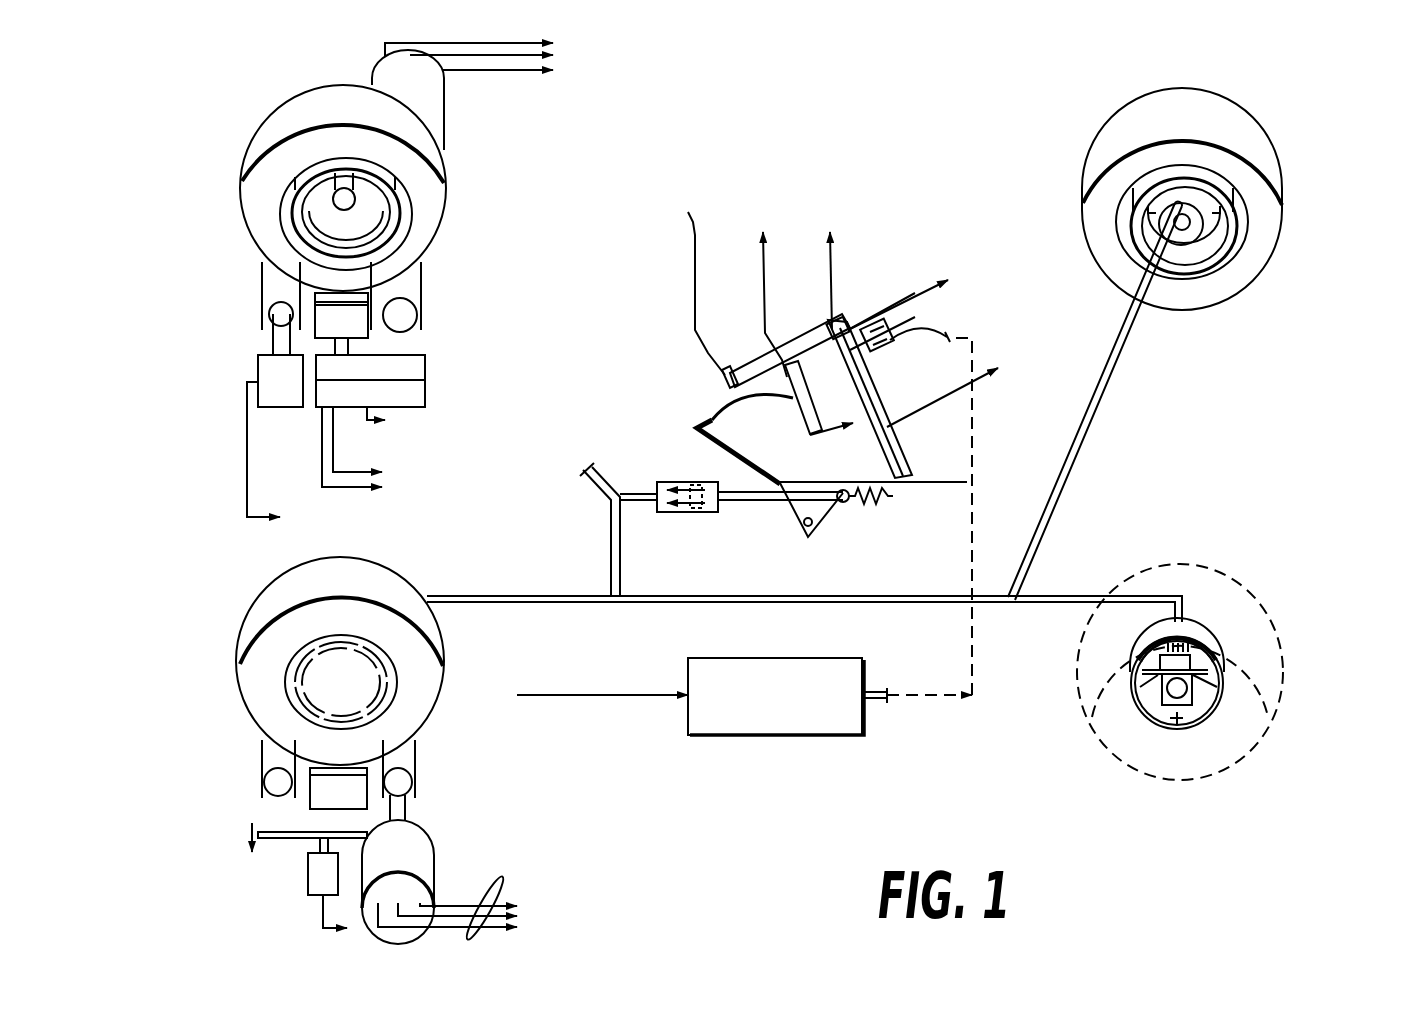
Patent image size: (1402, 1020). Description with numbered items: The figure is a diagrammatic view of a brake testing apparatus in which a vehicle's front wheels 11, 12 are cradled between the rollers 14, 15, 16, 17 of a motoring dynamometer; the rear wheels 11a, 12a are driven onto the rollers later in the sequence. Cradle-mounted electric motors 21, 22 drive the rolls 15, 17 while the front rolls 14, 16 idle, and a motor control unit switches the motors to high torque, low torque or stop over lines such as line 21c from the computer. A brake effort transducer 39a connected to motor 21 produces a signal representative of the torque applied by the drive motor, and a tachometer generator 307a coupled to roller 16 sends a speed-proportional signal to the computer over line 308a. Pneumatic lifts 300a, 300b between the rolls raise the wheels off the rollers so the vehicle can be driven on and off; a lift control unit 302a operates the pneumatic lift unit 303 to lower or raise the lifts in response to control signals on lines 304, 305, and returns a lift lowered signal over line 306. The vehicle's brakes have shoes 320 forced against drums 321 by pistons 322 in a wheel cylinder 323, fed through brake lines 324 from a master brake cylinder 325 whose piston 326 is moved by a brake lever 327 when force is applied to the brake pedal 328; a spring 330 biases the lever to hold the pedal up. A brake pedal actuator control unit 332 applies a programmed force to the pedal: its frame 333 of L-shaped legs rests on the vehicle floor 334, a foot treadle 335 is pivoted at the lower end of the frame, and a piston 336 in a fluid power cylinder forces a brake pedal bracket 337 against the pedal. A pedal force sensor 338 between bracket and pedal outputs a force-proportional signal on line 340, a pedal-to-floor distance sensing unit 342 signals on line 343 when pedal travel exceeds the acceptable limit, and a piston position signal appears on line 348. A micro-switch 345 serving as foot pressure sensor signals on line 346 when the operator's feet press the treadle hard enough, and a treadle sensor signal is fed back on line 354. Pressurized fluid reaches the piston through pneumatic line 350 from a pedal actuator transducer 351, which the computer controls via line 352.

The front wheel 11 is at (258, 588).
The rear wheel 11a is at (1282, 687).
The front wheel 12 is at (246, 135).
The rear wheel 12a is at (1283, 180).
The roller 14 is at (237, 788).
The drive roll 15 is at (416, 792).
The roller 16 is at (262, 285).
The drive roll 17 is at (427, 285).
The electric motor 21 is at (436, 854).
The motor control line 21c is at (531, 899).
The electric motor 22 is at (445, 99).
The brake effort transducer 39a is at (308, 880).
The pneumatic lift 300a is at (328, 318).
The pneumatic lift 300b is at (329, 787).
The lift control unit 302a is at (425, 393).
The pneumatic lift unit 303 is at (425, 358).
The control line 304 is at (320, 482).
The control line 305 is at (360, 486).
The lift lowered signal line 306 is at (362, 420).
The tachometer generator 307a is at (258, 375).
The tachometer signal line 308a is at (247, 460).
The brake shoe 320 is at (1217, 703).
The brake drum 321 is at (1217, 652).
The wheel cylinder piston 322 is at (1175, 640).
The wheel cylinder 323 is at (1142, 683).
The brake line 324 is at (1062, 596).
The master brake cylinder 325 is at (655, 482).
The master cylinder piston 326 is at (697, 513).
The brake lever 327 is at (778, 513).
The brake pedal 328 is at (727, 398).
The spring 330 is at (870, 505).
The brake pedal actuator control unit 332 is at (892, 207).
The frame 333 is at (713, 356).
The floor 334 is at (700, 281).
The foot treadle 335 is at (898, 441).
The piston 336 is at (888, 312).
The brake pedal bracket 337 is at (815, 418).
The pedal force sensor 338 is at (760, 365).
The pedal force signal line 340 is at (817, 214).
The pedal-to-floor distance sensing unit 342 is at (710, 418).
The pedal-to-floor signal line 343 is at (835, 433).
The foot pressure sensor micro-switch 345 is at (898, 433).
The foot pressure sensor signal line 346 is at (980, 370).
The piston position signal line 348 is at (925, 287).
The pneumatic line 350 is at (877, 690).
The pedal actuator transducer 351 is at (757, 657).
The control line 352 is at (652, 693).
The treadle sensor signal line 354 is at (893, 280).